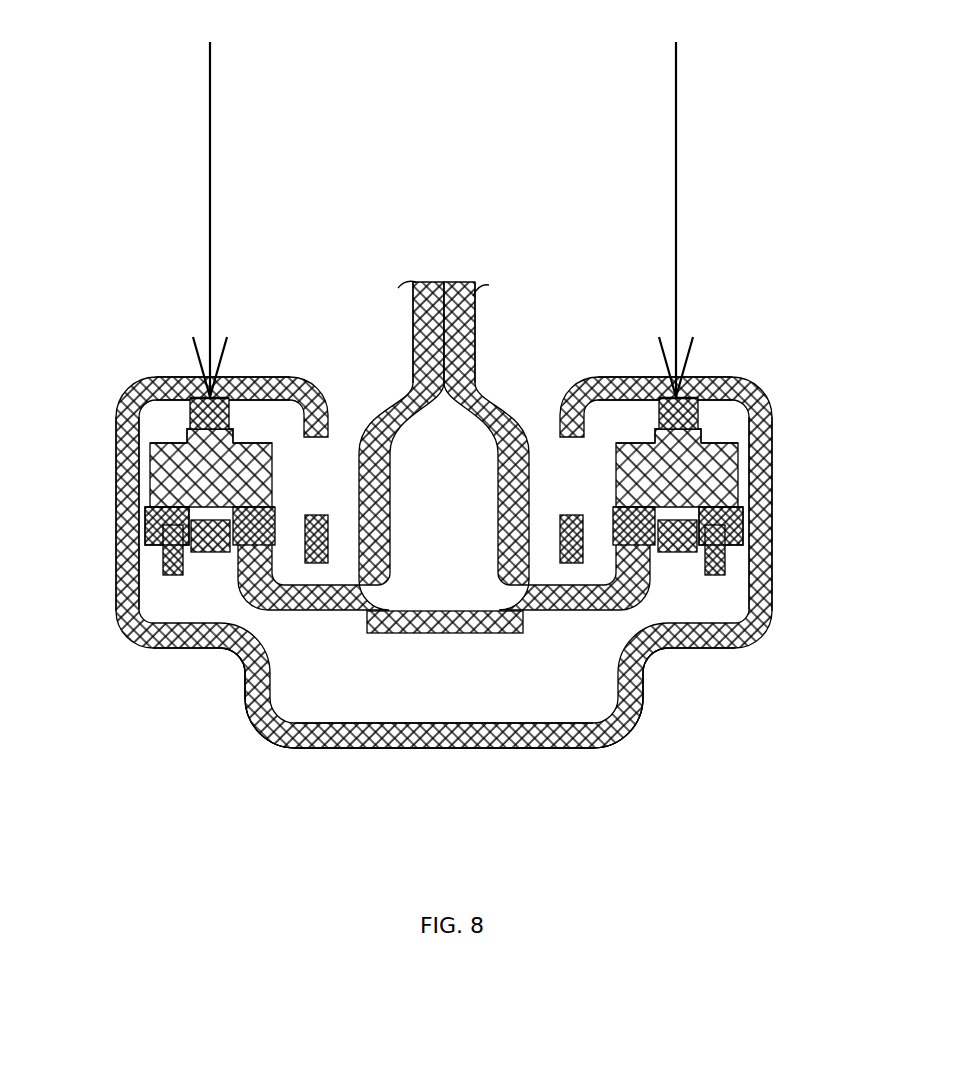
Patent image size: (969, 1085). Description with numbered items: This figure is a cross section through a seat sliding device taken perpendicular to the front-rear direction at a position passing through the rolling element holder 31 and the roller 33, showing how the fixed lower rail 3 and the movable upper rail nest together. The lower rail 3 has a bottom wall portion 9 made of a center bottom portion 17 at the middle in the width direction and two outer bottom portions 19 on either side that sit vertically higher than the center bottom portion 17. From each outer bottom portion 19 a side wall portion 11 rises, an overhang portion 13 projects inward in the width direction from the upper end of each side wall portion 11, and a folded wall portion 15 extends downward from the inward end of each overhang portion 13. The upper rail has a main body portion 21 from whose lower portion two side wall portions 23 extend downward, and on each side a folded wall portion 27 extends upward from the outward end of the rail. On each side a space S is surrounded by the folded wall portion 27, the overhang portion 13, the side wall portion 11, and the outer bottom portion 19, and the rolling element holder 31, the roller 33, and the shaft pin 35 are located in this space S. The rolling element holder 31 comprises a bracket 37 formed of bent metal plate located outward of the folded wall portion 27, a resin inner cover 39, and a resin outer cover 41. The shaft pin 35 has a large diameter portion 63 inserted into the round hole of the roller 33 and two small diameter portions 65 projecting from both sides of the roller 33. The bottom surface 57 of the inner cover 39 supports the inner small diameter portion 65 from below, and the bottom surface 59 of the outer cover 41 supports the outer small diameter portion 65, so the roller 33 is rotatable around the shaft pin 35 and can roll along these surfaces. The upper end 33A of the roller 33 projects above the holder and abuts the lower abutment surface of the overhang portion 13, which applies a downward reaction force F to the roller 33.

The lower rail 3 is at (757, 383).
The bottom wall portion 9 is at (320, 806).
The side wall portion 11 is at (115, 460).
The overhang portion 13 is at (188, 378).
The folded wall portion 15 is at (344, 540).
The center bottom portion 17 is at (444, 736).
The outer bottom portion 19 is at (207, 648).
The main body portion 21 is at (475, 320).
The side wall portion 23 is at (391, 478).
The folded wall portion 27 is at (250, 575).
The rolling element holder 31 is at (90, 614).
The roller 33 is at (190, 415).
The upper end 33A is at (218, 396).
The shaft pin 35 is at (160, 482).
The bracket 37 is at (166, 573).
The inner cover 39 is at (205, 553).
The outer cover 41 is at (153, 523).
The bottom surface 57 is at (262, 500).
The bottom surface 59 is at (156, 504).
The large diameter portion 63 is at (218, 462).
The small diameter portion 65 is at (260, 470).
The downward reaction force F is at (443, 207).
The space S is at (273, 428).